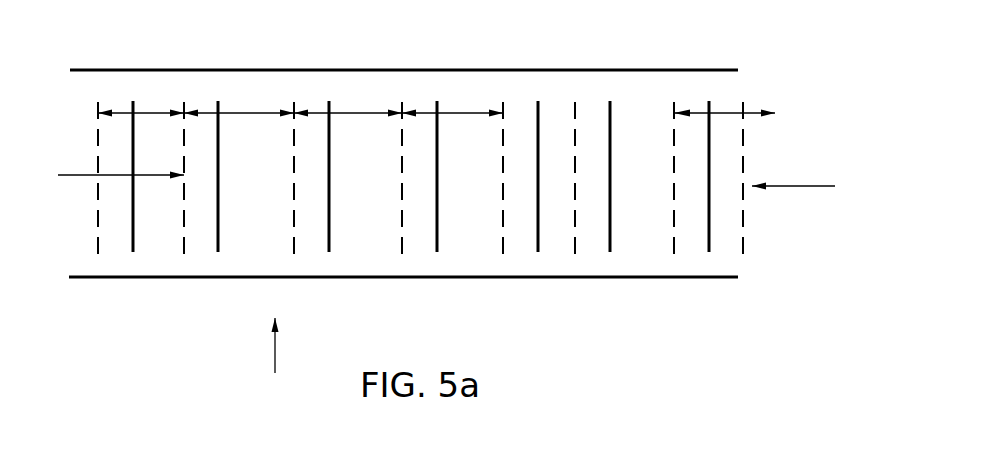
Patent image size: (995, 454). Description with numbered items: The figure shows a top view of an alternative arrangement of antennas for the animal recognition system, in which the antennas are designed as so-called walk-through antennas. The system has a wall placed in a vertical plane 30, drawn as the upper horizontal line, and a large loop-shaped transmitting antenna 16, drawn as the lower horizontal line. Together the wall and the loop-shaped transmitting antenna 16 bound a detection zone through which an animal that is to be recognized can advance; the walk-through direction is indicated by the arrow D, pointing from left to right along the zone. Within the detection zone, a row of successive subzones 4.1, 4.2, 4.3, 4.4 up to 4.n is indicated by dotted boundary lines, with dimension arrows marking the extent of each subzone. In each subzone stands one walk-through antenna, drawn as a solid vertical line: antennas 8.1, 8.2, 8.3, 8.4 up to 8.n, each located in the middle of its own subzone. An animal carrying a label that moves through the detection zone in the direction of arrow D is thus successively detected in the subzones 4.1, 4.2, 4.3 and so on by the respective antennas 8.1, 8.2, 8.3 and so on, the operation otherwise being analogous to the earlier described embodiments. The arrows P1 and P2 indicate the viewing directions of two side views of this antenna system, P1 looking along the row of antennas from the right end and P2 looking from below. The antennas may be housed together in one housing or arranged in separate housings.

The vertical plane 30 is at (428, 70).
The loop-shaped transmitting antenna 16 is at (500, 277).
The first subzone 4.1 is at (153, 113).
The second subzone 4.2 is at (249, 113).
The third subzone 4.3 is at (355, 113).
The fourth subzone 4.4 is at (462, 113).
The n-th subzone 4.n is at (720, 113).
The first antenna 8.1 is at (133, 133).
The second antenna 8.2 is at (218, 133).
The third antenna 8.3 is at (329, 133).
The fourth antenna 8.4 is at (437, 133).
The n-th antenna 8.n is at (709, 140).
The walk-through direction arrow D is at (121, 191).
The first viewing direction arrow P1 is at (793, 201).
The second viewing direction arrow P2 is at (292, 345).